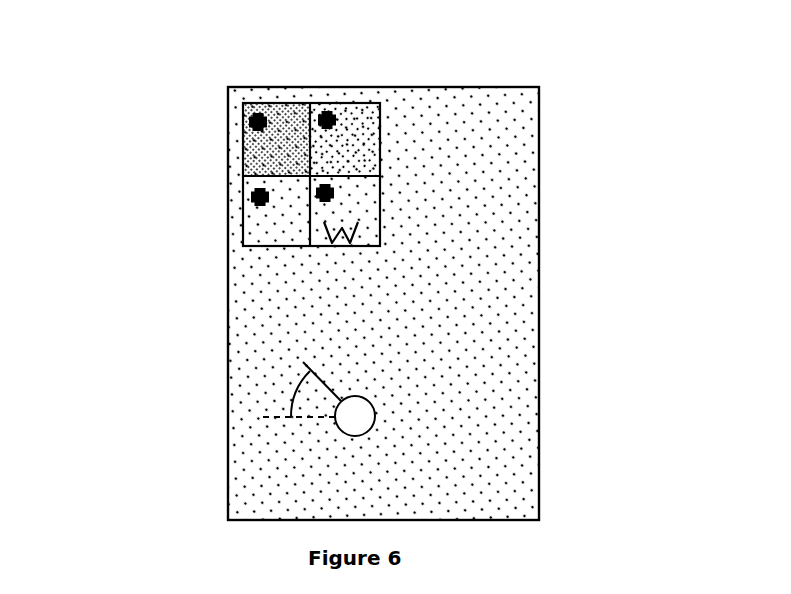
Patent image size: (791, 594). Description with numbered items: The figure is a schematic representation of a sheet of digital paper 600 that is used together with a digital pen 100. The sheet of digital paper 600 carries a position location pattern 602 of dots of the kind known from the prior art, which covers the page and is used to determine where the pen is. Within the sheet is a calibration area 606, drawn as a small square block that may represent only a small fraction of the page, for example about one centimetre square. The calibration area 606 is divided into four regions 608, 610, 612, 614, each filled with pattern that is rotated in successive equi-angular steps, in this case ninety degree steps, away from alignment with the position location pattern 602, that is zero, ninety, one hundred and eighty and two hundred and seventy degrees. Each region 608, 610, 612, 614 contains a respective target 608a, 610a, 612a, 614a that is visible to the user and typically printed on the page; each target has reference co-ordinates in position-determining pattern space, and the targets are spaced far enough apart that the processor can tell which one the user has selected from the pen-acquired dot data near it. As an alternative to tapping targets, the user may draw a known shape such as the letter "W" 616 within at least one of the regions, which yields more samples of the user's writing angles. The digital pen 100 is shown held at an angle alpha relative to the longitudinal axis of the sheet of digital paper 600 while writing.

The digital pen 100 is at (356, 431).
The sheet of digital paper 600 is at (451, 193).
The position location pattern 602 is at (477, 121).
The calibration area 606 is at (236, 165).
The region 608 is at (254, 231).
The target 608a is at (254, 196).
The region 610 is at (302, 112).
The target 610a is at (256, 115).
The region 612 is at (379, 127).
The target 612a is at (338, 113).
The region 614 is at (381, 250).
The target 614a is at (336, 193).
The letter "W" 616 is at (333, 247).